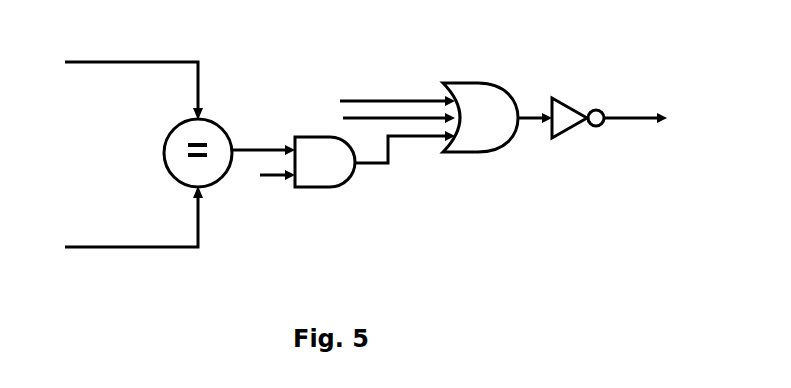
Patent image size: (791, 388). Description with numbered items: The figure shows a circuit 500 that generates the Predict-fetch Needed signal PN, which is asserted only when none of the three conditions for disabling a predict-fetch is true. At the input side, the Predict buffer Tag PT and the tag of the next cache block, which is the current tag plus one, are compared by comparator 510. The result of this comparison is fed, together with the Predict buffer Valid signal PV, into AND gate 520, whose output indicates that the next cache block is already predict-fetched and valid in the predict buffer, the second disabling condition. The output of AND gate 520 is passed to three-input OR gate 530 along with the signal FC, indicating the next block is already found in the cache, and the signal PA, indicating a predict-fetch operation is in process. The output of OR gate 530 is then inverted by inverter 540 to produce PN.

The circuit 500 is at (301, 39).
The comparator 510 is at (166, 124).
The AND gate 520 is at (325, 162).
The three-input OR gate 530 is at (480, 117).
The inverter 540 is at (548, 98).